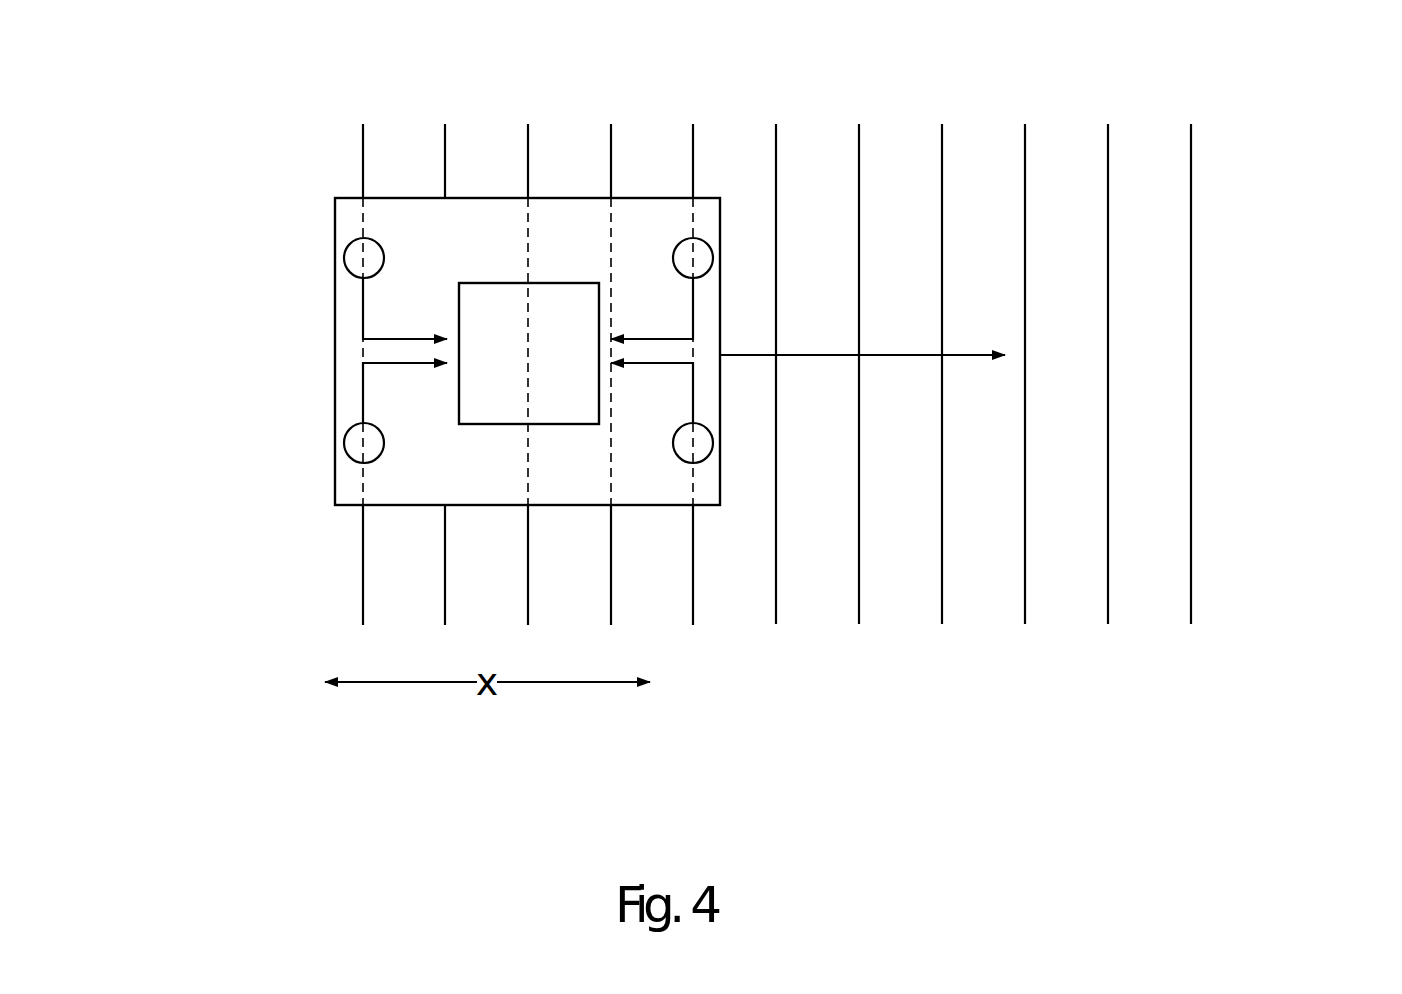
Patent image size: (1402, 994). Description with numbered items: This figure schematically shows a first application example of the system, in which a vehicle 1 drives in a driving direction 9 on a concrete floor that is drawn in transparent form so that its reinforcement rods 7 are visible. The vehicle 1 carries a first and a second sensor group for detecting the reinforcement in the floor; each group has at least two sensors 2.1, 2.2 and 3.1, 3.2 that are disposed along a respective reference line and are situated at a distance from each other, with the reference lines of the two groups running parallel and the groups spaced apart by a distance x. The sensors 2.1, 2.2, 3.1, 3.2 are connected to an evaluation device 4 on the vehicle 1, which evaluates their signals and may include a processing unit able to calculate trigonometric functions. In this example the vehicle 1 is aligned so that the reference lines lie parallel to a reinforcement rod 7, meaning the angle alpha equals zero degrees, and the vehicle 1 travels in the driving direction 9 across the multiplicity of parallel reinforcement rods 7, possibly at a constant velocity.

The vehicle 1 is at (653, 505).
The sensor 2.1 is at (695, 462).
The sensor 2.2 is at (694, 240).
The sensor 3.1 is at (352, 457).
The sensor 3.2 is at (353, 243).
The evaluation device 4 is at (510, 283).
The reinforcement rods 7 is at (1026, 432).
The driving direction 9 is at (959, 356).